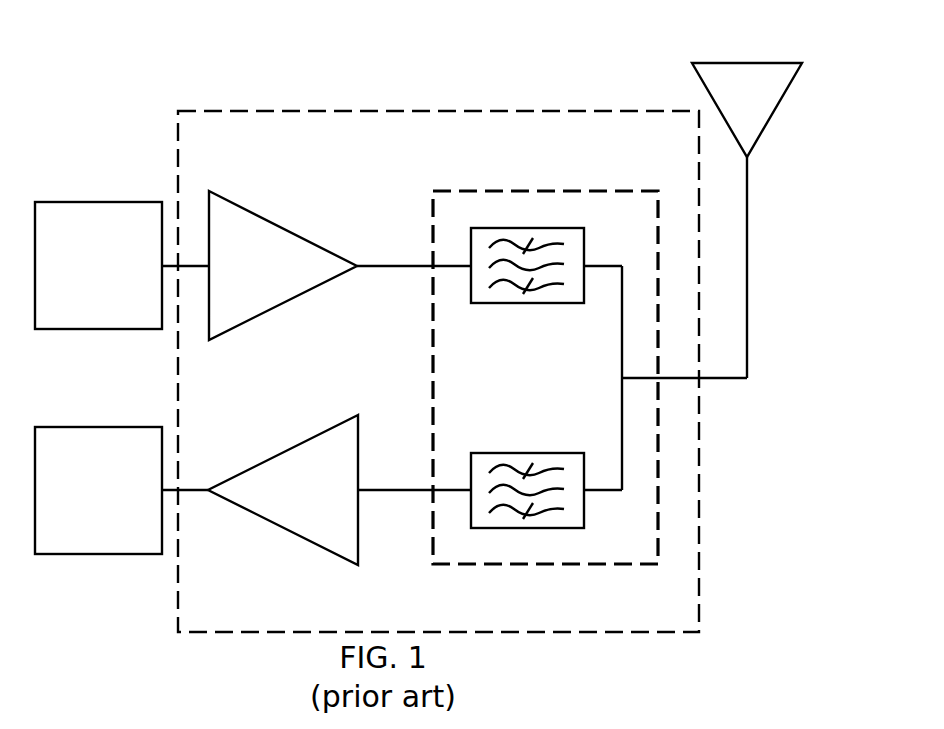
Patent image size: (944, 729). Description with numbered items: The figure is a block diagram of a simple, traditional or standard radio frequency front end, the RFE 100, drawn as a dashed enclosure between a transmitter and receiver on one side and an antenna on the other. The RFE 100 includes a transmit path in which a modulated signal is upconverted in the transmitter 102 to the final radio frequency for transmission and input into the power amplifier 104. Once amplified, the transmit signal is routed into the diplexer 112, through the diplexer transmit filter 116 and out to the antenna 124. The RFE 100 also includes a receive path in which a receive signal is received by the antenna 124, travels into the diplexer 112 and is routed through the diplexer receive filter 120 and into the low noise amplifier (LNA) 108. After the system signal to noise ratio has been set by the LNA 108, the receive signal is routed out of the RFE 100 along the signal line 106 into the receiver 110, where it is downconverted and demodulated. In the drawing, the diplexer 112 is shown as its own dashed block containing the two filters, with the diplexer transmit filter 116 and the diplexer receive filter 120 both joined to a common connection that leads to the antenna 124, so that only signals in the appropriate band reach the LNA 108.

The RFE 100 is at (335, 90).
The transmitter 102 is at (96, 202).
The power amplifier 104 is at (265, 219).
The signal line 106 is at (410, 493).
The low noise amplifier (LNA) 108 is at (278, 525).
The receiver 110 is at (96, 427).
The diplexer 112 is at (537, 191).
The diplexer transmit filter 116 is at (585, 247).
The diplexer receive filter 120 is at (585, 470).
The antenna 124 is at (742, 63).